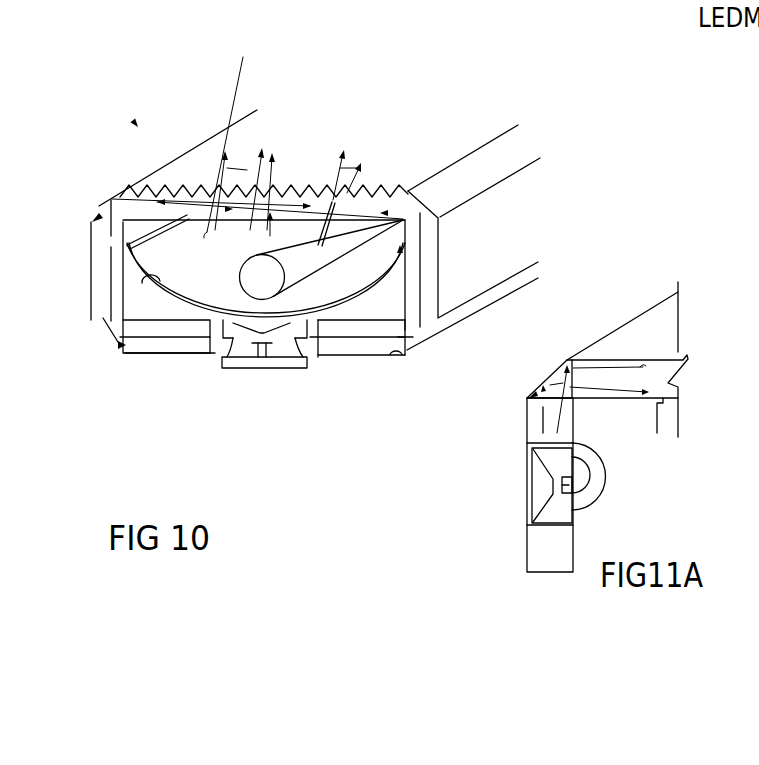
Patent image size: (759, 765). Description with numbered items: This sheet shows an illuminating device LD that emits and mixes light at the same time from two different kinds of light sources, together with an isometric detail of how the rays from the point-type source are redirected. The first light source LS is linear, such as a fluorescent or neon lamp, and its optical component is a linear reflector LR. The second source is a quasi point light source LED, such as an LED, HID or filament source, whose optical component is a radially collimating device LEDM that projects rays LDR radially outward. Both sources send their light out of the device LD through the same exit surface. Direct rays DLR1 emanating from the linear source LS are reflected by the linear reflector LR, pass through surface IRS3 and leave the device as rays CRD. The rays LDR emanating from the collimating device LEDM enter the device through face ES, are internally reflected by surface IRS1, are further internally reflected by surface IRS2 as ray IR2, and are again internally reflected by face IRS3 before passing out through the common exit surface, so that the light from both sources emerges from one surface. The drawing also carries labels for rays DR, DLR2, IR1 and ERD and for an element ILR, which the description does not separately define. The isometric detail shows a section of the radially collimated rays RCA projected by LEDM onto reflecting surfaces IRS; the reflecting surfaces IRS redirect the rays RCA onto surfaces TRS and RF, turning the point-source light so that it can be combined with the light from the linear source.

In FIG. 10, the illuminating device LD is at (92, 77).
In FIG. 10, the face IRS3 is at (139, 226).
In FIG. 10, the ray IR2 is at (183, 223).
In FIG. 10, the surface IRS2 is at (99, 214).
In FIG. 10, the rays CRD is at (243, 172).
In FIG. 10, the diffused light ray 2 DLR2 is at (275, 218).
In FIG. 10, the direct ray DR is at (345, 197).
In FIG. 10, the infrared ray 1 IR1 is at (487, 228).
In FIG. 10, the inner light receiving wall ILR is at (115, 266).
In FIG. 10, the linear reflector LR is at (140, 265).
In FIG. 10, the direct rays DLR1 is at (205, 288).
In FIG. 10, the surface IRS1 is at (98, 323).
In FIG. 10, the first light source LS is at (257, 283).
In FIG. 10, the rays LDR is at (124, 346).
In FIG. 10, the face ES is at (214, 345).
In FIG. 10, the quasi point light source LED is at (261, 357).
In FIG. 11A, the quasi point light source LED is at (560, 485).
In FIG. 10, the radially collimating device LEDM is at (283, 359).
In FIG. 11A, the radially collimating device LEDM is at (547, 500).
In FIG. 10, the emitted ray direction ERD is at (345, 362).
In FIG. 11A, the reflecting surfaces IRS is at (563, 358).
In FIG. 11A, the surface RF is at (657, 353).
In FIG. 11A, the surface TRS is at (607, 407).
In FIG. 11A, the radially collimated rays RCA is at (543, 428).